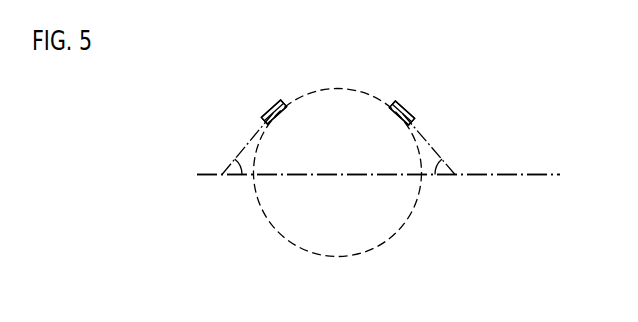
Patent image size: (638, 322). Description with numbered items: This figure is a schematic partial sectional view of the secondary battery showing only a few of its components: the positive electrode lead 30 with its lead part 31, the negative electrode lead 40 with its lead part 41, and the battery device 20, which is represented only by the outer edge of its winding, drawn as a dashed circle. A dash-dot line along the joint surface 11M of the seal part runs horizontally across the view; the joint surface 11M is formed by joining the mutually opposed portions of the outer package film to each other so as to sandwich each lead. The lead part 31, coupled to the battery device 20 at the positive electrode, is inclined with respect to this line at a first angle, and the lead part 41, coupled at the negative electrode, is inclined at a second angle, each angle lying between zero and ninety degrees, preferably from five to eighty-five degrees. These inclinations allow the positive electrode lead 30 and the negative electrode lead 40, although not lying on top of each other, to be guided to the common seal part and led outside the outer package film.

The battery device 20 is at (412, 210).
The positive electrode lead 30 is at (268, 107).
The lead part 31 is at (273, 112).
The negative electrode lead 40 is at (412, 110).
The lead part 41 is at (401, 113).
The joint surface 11M is at (447, 167).